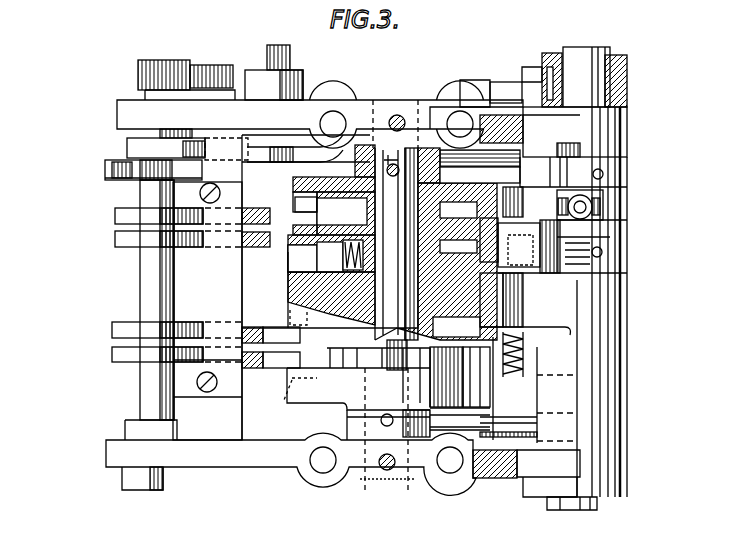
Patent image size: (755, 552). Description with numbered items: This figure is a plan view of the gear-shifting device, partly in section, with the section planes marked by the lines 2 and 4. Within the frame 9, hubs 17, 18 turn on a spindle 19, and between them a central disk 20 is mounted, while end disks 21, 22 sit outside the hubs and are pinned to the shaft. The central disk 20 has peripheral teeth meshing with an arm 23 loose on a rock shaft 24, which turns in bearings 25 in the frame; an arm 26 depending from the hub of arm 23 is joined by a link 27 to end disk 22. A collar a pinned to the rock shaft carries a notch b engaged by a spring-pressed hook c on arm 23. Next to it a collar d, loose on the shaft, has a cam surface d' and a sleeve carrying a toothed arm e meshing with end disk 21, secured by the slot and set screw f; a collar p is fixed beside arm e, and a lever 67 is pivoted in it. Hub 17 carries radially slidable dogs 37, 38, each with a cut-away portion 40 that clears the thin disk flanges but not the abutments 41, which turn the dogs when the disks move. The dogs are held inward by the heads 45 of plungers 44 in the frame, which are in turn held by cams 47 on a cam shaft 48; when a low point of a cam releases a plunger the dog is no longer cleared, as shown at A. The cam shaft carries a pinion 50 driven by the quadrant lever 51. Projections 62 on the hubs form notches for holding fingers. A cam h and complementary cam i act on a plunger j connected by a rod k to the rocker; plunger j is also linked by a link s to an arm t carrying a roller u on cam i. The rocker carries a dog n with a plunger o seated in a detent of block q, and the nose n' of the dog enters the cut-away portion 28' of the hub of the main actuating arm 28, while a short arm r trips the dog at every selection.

The section line 2- 2 is at (298, 100).
The section line 4- 4 is at (118, 338).
The frame 9 is at (503, 480).
The hub 17 is at (403, 250).
The hub 18 is at (336, 348).
The spindle 19 is at (379, 490).
The central disk 20 is at (298, 297).
The end disk 21 is at (315, 183).
The end disk 22 is at (336, 287).
The arm 23 is at (525, 304).
The rock shaft 24 is at (590, 50).
The bearings 25 is at (627, 138).
The arm 26 is at (627, 362).
The link 27 is at (500, 418).
The main actuating arm 28 is at (636, 81).
The cut-away portion 28' is at (546, 65).
The dog 37 is at (334, 213).
The dog 38 is at (331, 253).
The cut-away portion 40 is at (300, 204).
The abutments 41 is at (284, 402).
The plungers 44 is at (254, 214).
The heads 45 is at (258, 251).
The cams 47 is at (118, 236).
The cam shaft 48 is at (141, 290).
The pinion 50 is at (140, 68).
The lever 51 is at (262, 72).
The projections 62 is at (378, 370).
The lever 67 is at (533, 148).
The position A is at (284, 298).
The collar a is at (628, 270).
The notch b is at (560, 262).
The spring-pressed hook c is at (510, 242).
The collar d is at (611, 246).
The cam surface d' is at (544, 233).
The toothed arm e is at (628, 210).
The set screw f is at (600, 208).
The cam h is at (126, 146).
The complementary cam i is at (143, 176).
The plunger j is at (255, 150).
The rod k is at (320, 114).
The dog n is at (481, 121).
The nose n' is at (506, 136).
The plunger o is at (586, 190).
The collar p is at (628, 178).
The block q is at (460, 82).
The short arm r is at (535, 66).
The link s is at (143, 130).
The arm t is at (108, 163).
The roller u is at (121, 178).